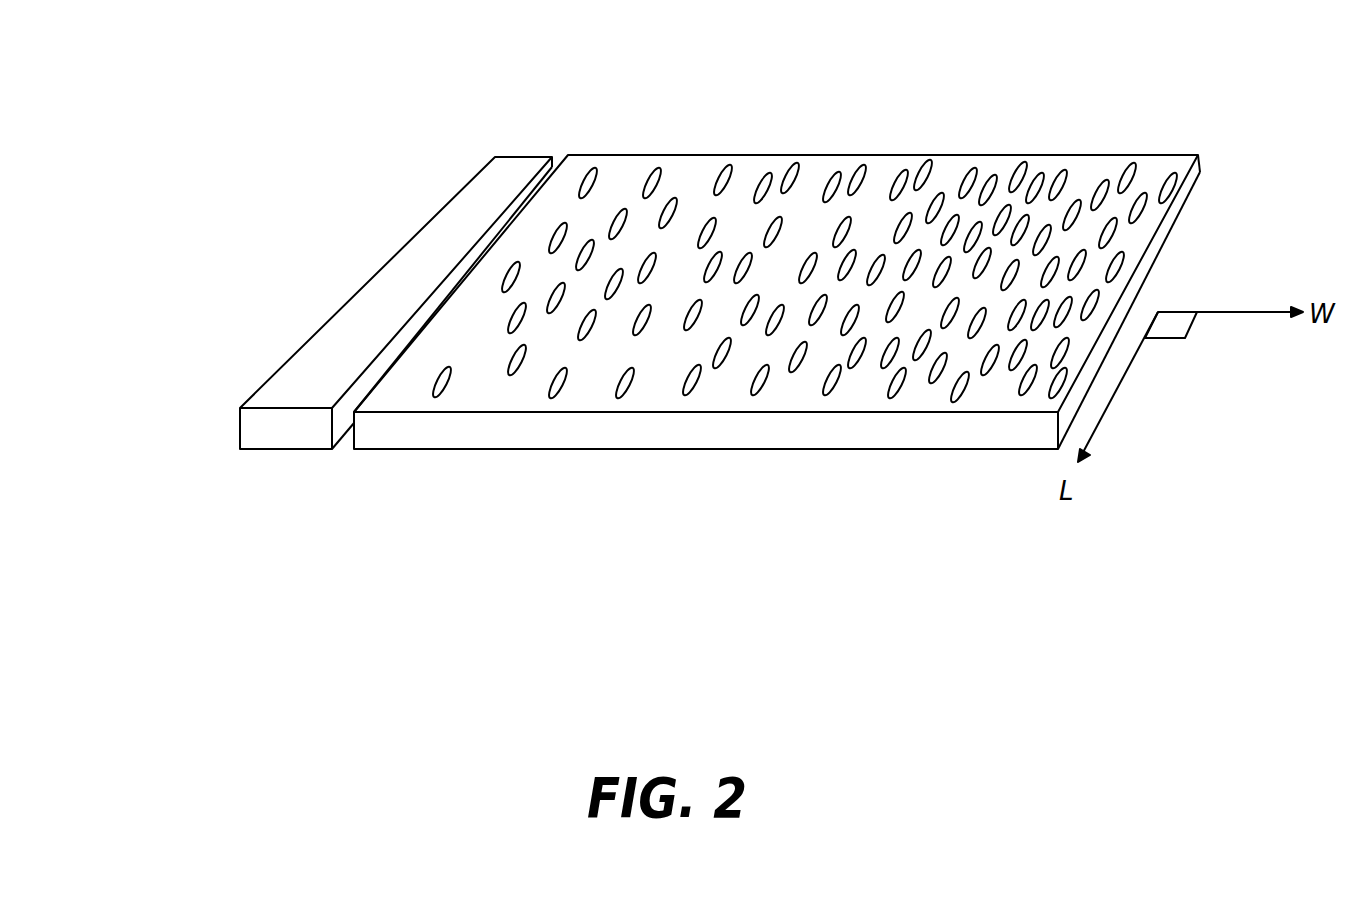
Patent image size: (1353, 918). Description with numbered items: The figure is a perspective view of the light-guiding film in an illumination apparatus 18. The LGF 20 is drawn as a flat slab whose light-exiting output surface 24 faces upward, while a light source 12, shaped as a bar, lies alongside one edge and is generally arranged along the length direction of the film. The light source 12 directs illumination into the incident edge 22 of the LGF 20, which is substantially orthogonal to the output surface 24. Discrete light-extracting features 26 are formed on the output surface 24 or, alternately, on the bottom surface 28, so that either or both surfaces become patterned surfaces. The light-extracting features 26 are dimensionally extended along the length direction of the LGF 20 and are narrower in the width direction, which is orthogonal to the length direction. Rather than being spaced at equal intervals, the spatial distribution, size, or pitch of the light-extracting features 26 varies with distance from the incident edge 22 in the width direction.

The light source 12 is at (240, 430).
The illumination apparatus 18 is at (313, 114).
The light-guiding film (LGF) 20 is at (537, 448).
The incident edge 22 is at (550, 168).
The output surface 24 is at (897, 165).
The light-extracting features 26 is at (643, 198).
The bottom surface 28 is at (802, 448).